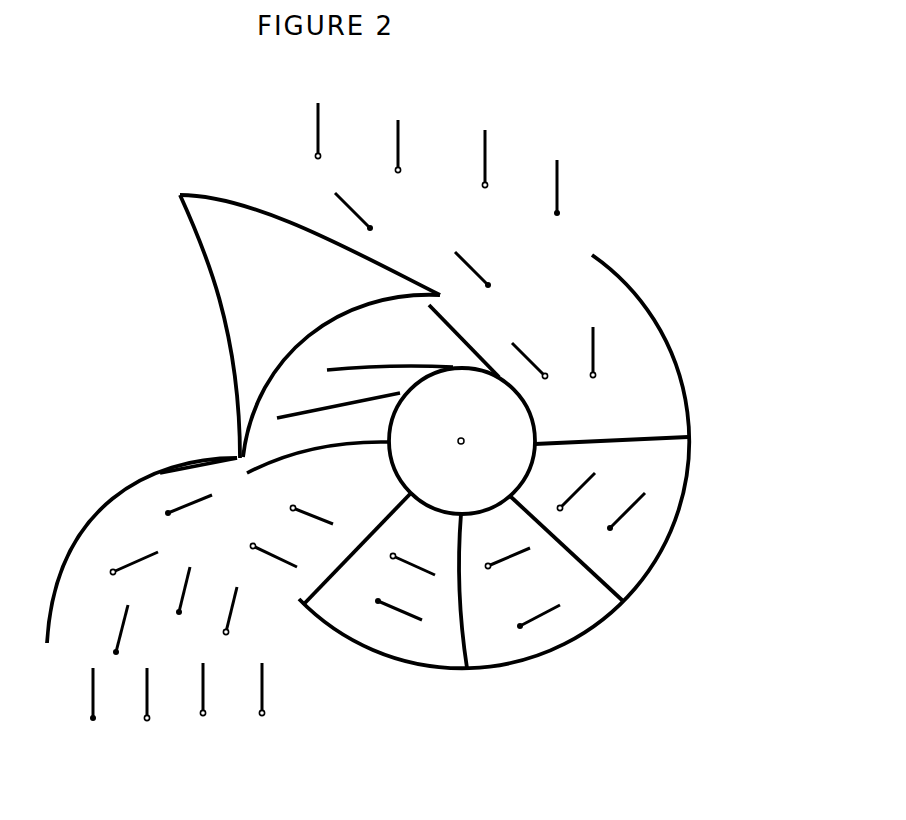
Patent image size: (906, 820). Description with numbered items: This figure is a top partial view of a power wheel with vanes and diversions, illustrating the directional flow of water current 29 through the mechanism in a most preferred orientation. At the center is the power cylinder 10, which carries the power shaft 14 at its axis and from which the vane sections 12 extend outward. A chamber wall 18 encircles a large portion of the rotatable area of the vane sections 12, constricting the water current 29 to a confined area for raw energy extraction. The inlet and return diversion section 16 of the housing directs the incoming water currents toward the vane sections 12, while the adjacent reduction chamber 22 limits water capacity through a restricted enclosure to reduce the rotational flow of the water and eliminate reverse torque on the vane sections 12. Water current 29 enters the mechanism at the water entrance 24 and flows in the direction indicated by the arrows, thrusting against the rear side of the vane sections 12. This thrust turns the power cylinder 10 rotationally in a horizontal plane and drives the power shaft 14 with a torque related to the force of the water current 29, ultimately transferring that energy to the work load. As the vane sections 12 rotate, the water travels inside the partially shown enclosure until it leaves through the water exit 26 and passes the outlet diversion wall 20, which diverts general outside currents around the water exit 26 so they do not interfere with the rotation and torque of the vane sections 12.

The power cylinder 10 is at (472, 493).
The vane sections 12 is at (630, 447).
The power shaft 14 is at (457, 440).
The inlet and return diversion section 16 is at (287, 271).
The chamber wall 18 is at (687, 375).
The outlet diversion wall 20 is at (90, 515).
The reduction chamber 22 is at (337, 342).
The water entrance 24 is at (545, 263).
The water exit 26 is at (207, 538).
The water current 29 is at (452, 184).